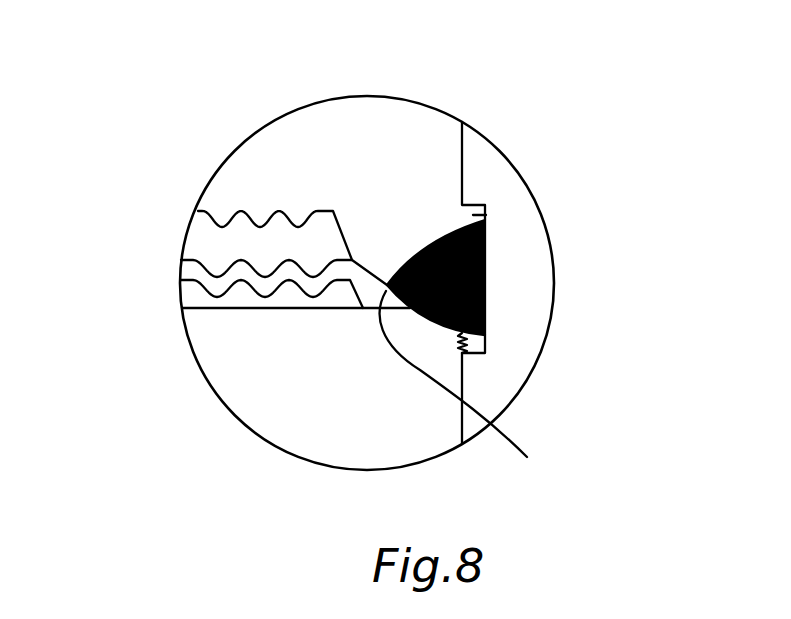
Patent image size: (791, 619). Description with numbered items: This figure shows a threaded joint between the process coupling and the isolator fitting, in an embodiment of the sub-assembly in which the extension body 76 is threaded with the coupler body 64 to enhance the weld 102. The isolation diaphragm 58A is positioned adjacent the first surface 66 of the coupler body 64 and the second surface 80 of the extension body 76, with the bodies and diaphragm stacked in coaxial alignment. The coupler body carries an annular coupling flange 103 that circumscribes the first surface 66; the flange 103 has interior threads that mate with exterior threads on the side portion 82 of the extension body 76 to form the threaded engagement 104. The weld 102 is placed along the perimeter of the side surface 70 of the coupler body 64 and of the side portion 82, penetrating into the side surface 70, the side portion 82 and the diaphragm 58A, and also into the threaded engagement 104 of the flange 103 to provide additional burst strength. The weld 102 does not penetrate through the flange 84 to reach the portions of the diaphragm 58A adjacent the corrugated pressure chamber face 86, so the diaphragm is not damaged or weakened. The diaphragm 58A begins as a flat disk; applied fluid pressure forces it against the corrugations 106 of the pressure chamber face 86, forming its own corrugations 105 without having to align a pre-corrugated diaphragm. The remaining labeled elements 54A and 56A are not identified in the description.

The first layer 54A is at (395, 144).
The second layer 56A is at (318, 407).
The isolation diaphragm 58A is at (237, 265).
The coupler body 64 is at (389, 423).
The first surface 66 is at (244, 310).
The side surface 70 is at (464, 388).
The extension body 76 is at (286, 157).
The second surface 80 is at (467, 386).
The side portion 82 is at (465, 198).
The flange 84 is at (396, 193).
The pressure chamber face 86 is at (290, 209).
The weld 102 is at (487, 262).
The annular coupling flange 103 is at (486, 215).
The threaded engagement 104 is at (487, 350).
The corrugations 105 is at (200, 297).
The corrugations 106 is at (234, 215).